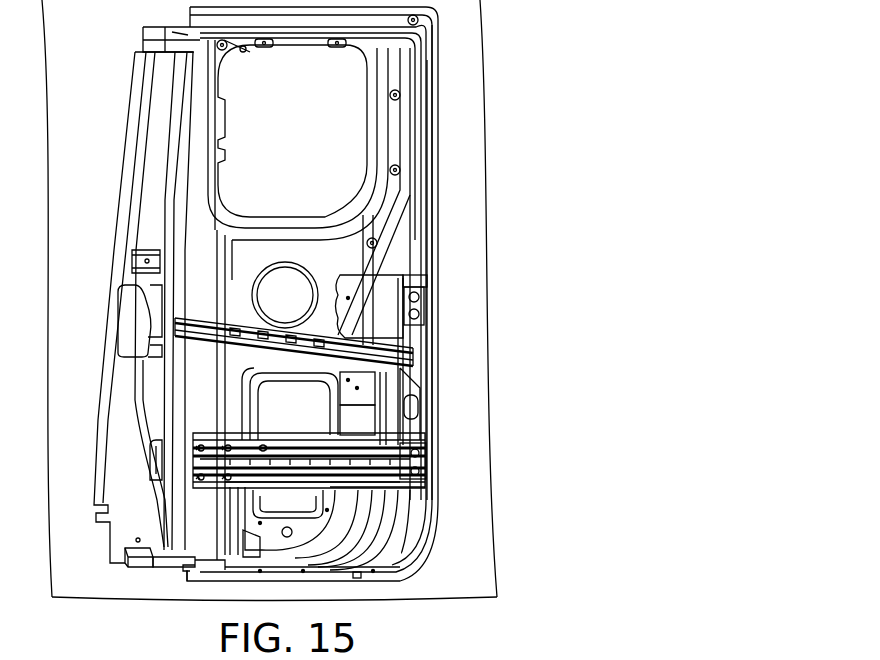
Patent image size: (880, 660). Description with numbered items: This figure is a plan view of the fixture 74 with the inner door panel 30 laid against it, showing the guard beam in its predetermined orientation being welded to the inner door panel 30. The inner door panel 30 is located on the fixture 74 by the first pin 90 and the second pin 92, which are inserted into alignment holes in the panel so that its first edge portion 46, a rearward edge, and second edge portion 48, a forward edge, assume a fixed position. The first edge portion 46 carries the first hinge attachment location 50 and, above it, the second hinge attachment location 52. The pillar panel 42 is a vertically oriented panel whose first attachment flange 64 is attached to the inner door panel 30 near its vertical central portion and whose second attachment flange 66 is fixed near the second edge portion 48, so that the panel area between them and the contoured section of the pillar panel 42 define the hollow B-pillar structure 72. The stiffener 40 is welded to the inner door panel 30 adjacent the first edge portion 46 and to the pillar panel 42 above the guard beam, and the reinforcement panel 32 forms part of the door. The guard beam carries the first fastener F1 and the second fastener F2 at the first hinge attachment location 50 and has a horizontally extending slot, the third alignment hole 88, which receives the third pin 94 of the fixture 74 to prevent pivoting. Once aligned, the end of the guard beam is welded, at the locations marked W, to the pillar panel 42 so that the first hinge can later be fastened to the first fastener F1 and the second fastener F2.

The fixture 74 is at (493, 36).
The inner door panel 30 is at (441, 80).
The first pin 90 is at (243, 52).
The pillar panel 42 is at (195, 114).
The hollow B-pillar structure 72 is at (191, 153).
The second attachment flange 66 is at (166, 205).
The second edge portion 48 is at (110, 272).
The stiffener 40 is at (193, 328).
The first attachment flange 64 is at (240, 301).
The reinforcement panel 32 is at (368, 302).
The second hinge attachment location 52 is at (427, 304).
The first edge portion 46 is at (440, 349).
The welding washer W is at (226, 447).
The third pin 94 is at (264, 445).
The third alignment hole 88 is at (272, 446).
The first fastener F1 is at (419, 453).
The first hinge attachment location 50 is at (430, 465).
The second fastener F2 is at (418, 478).
The second pin 92 is at (358, 580).